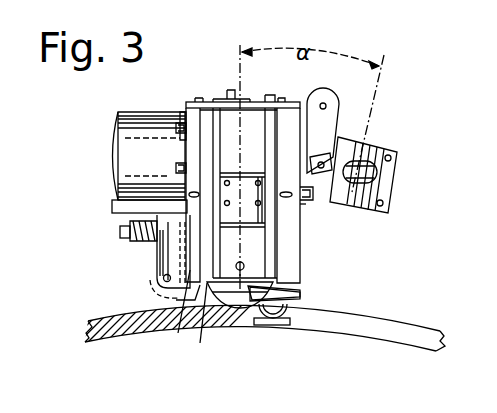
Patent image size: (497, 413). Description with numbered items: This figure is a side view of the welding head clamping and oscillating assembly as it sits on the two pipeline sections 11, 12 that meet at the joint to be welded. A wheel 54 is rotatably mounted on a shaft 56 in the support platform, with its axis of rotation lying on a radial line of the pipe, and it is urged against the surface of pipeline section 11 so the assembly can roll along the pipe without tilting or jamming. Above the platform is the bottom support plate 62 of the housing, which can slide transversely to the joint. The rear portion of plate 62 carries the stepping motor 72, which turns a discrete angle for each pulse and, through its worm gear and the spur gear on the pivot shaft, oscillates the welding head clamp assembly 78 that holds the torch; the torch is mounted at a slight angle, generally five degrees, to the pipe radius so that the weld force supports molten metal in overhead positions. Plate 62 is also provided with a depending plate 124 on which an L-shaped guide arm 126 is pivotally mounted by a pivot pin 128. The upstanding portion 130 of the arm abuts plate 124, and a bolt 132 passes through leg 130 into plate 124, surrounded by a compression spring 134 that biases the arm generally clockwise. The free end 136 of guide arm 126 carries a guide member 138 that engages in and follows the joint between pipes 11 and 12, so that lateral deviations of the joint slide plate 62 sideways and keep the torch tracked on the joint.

The pipeline section 11 is at (128, 333).
The pipeline section 12 is at (422, 334).
The wheel 54 is at (260, 290).
The shaft 56 is at (238, 295).
The bottom support plate 62 is at (113, 203).
The stepping motor 72 is at (141, 112).
The welding head clamp assembly 78 is at (397, 172).
The depending plate 124 is at (178, 333).
The guide arm 126 is at (200, 343).
The pivot pin 128 is at (158, 285).
The upstanding portion 130 is at (160, 265).
The bolt 132 is at (118, 234).
The compression spring 134 is at (121, 222).
The free end 136 is at (291, 300).
The guide member 138 is at (290, 320).